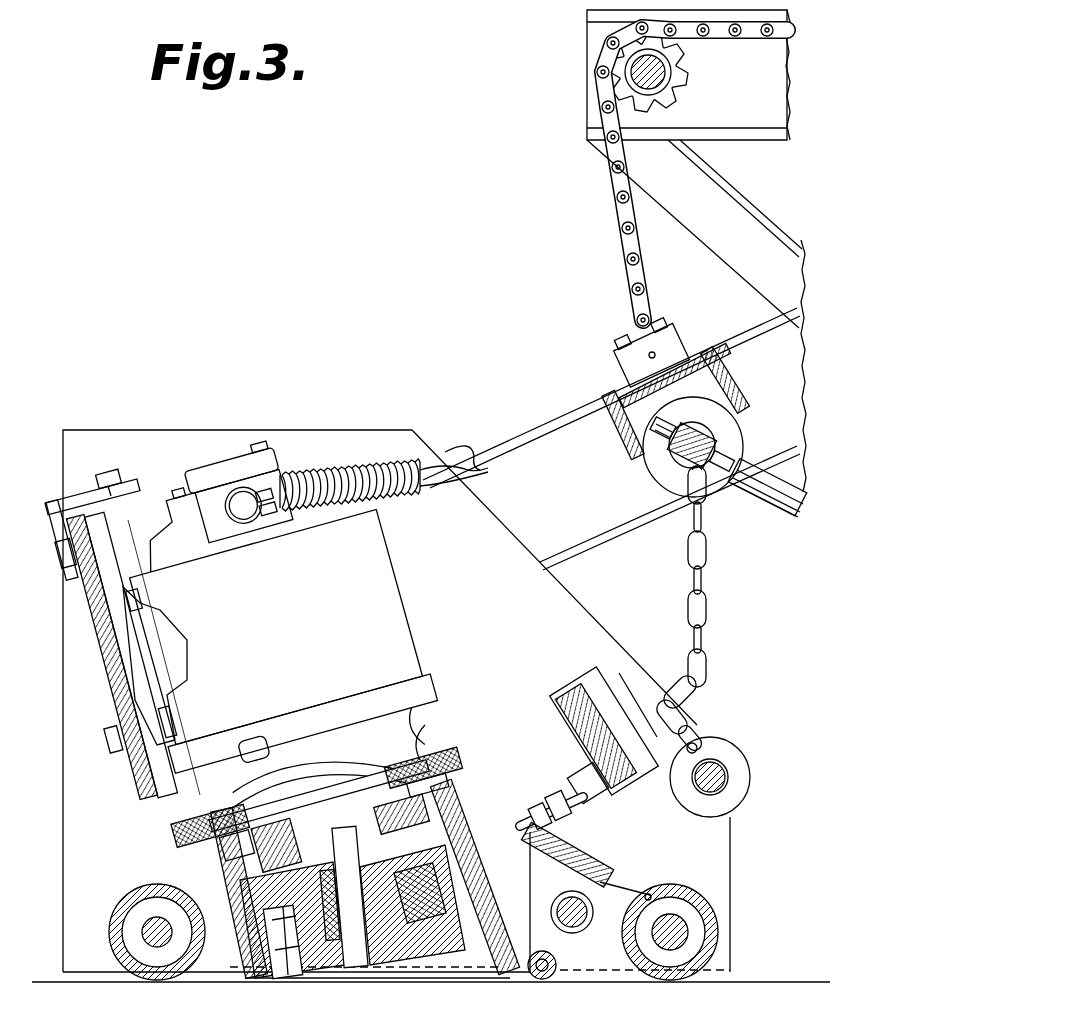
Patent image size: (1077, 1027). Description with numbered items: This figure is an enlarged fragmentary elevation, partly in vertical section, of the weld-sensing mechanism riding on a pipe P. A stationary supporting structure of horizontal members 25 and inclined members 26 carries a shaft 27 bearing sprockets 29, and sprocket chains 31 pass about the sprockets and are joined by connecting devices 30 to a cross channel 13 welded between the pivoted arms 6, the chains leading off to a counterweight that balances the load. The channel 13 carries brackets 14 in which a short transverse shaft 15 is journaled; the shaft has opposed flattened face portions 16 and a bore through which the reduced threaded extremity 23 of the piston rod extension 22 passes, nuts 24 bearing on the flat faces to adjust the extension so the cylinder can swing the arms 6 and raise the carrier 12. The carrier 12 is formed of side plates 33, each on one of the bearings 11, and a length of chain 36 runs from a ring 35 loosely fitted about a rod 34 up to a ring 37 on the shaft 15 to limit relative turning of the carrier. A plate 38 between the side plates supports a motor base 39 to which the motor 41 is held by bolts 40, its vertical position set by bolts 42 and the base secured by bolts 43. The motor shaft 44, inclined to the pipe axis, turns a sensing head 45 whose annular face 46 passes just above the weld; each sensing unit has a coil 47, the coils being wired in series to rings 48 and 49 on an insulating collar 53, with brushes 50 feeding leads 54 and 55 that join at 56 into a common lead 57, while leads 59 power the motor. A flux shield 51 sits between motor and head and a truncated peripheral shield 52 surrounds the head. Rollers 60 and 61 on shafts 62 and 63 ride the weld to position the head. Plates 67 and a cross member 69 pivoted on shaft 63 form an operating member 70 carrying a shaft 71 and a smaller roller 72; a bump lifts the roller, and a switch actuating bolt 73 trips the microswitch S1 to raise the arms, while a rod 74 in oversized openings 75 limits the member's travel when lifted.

The arms 6 is at (540, 440).
The bearings 11 is at (405, 905).
The carrier 12 is at (245, 429).
The cross channel 13 is at (620, 426).
The brackets 14 is at (730, 380).
The short transverse shaft 15 is at (735, 425).
The flattened face portions 16 is at (675, 465).
The piston rod extension 22 is at (762, 505).
The reduced threaded extremity 23 is at (704, 490).
The nuts 24 is at (670, 446).
The horizontal members 25 is at (752, 118).
The inclined members 26 is at (742, 222).
The shaft 27 is at (658, 79).
The sprockets 29 is at (682, 58).
The connecting devices 30 is at (674, 345).
The sprocket chains 31 is at (614, 212).
The side plates 33 is at (548, 580).
The rod 34 is at (722, 773).
The ring 35 is at (724, 746).
The length of chain 36 is at (706, 670).
The ring 37 is at (690, 505).
The plate 38 is at (100, 628).
The motor base 39 is at (120, 668).
The bolts 40 is at (150, 602).
The motor 41 is at (268, 598).
The bolts 42 is at (100, 476).
The bolts 43 is at (58, 558).
The motor shaft 44 is at (352, 880).
The sensing head 45 is at (330, 900).
The annular face 46 is at (268, 960).
The coil 47 is at (440, 890).
The ring 48 is at (238, 860).
The ring 49 is at (275, 865).
The brushes 50 is at (362, 777).
The flux shield 51 is at (455, 765).
The peripheral shield 52 is at (445, 845).
The insulating collar 53 is at (430, 825).
The lead 54 is at (430, 790).
The lead 55 is at (200, 835).
The junction 56 is at (420, 720).
The common lead 57 is at (430, 748).
The leads 59 is at (466, 462).
The roller 60 is at (150, 975).
The roller 61 is at (716, 918).
The shaft 62 is at (152, 945).
The shaft 63 is at (688, 932).
The plates 67 is at (632, 890).
The cross member 69 is at (598, 860).
The operating member 70 is at (655, 892).
The shaft 71 is at (546, 975).
The roller 72 is at (535, 975).
The switch actuating bolt 73 is at (555, 812).
The rod 74 is at (572, 925).
The openings 75 is at (575, 893).
The microswitch S1 is at (566, 735).
The pipe P is at (778, 982).